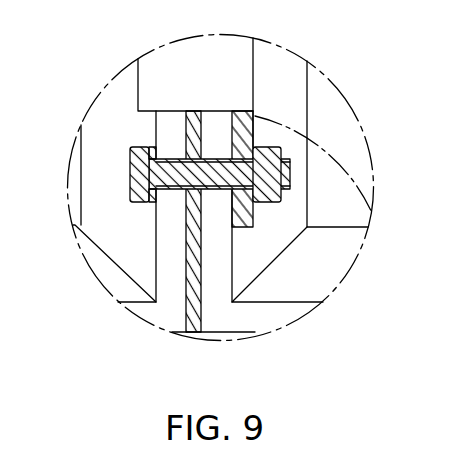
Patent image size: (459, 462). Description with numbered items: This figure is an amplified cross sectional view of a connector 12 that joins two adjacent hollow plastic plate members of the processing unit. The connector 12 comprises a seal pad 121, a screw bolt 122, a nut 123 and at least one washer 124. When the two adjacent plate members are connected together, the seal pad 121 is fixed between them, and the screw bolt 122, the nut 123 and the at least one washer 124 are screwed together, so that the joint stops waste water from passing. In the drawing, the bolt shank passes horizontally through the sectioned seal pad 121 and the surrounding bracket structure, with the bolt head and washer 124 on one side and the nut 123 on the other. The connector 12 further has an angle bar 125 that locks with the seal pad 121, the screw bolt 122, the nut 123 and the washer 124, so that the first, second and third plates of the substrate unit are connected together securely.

The connector 12 is at (126, 209).
The seal pad 121 is at (192, 305).
The screw bolt 122 is at (133, 160).
The nut 123 is at (267, 147).
The washer 124 is at (152, 148).
The angle bar 125 is at (247, 217).